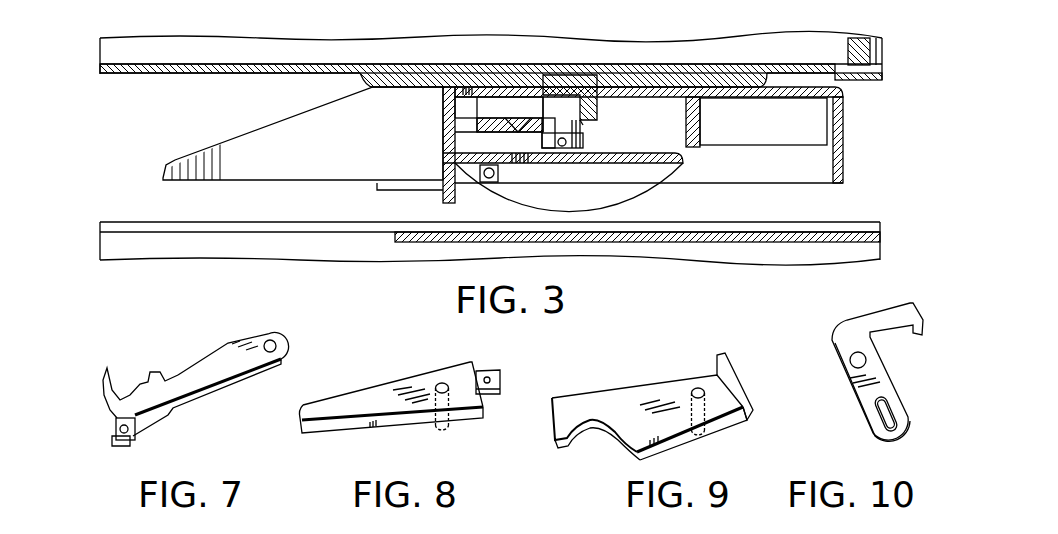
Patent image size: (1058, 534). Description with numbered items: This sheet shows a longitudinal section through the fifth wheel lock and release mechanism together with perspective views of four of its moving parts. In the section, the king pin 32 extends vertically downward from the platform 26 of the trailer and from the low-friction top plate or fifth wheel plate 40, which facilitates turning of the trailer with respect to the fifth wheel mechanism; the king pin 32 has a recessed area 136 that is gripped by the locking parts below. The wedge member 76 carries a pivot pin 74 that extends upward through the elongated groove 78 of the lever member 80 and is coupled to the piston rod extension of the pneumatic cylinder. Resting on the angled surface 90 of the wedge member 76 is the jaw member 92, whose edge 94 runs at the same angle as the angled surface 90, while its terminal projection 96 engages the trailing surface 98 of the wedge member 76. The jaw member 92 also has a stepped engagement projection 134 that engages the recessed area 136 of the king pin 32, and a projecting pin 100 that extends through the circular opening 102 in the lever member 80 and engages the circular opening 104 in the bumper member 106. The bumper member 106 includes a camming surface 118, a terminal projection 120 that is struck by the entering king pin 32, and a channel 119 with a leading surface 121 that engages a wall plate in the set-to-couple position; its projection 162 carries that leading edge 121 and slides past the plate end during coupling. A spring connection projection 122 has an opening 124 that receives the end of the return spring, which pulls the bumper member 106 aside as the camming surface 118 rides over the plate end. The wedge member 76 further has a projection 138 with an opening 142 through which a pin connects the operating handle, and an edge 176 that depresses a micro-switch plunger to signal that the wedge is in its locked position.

In FIG. 3, the platform 26 is at (143, 75).
In FIG. 3, the top plate or fifth wheel plate 40 is at (741, 80).
In FIG. 3, the king pin 32 is at (560, 108).
In FIG. 3, the recessed area 136 is at (583, 125).
In FIG. 7, the circular opening 104 is at (270, 338).
In FIG. 7, the bumper member 106 is at (199, 384).
In FIG. 7, the terminal projection 120 is at (107, 368).
In FIG. 7, the leading surface 121 is at (145, 370).
In FIG. 7, the projection 162 is at (157, 373).
In FIG. 7, the camming surface 118 is at (165, 378).
In FIG. 7, the channel 119 is at (132, 388).
In FIG. 7, the spring connection projection 122 is at (135, 437).
In FIG. 7, the opening 124 is at (113, 433).
In FIG. 8, the wedge member 76 is at (350, 392).
In FIG. 8, the angled surface 90 is at (400, 377).
In FIG. 8, the opening 142 is at (480, 375).
In FIG. 8, the projection 138 is at (497, 372).
In FIG. 8, the edge 176 is at (300, 423).
In FIG. 8, the pivot pin 74 is at (446, 430).
In FIG. 8, the trailing surface 98 is at (487, 402).
In FIG. 9, the jaw member 92 is at (623, 398).
In FIG. 9, the edge 94 is at (653, 382).
In FIG. 9, the terminal projection 96 is at (732, 363).
In FIG. 9, the projecting pin 100 is at (704, 427).
In FIG. 9, the stepped engagement projection 134 is at (584, 434).
In FIG. 10, the lever member 80 is at (845, 320).
In FIG. 10, the circular opening 102 is at (861, 361).
In FIG. 10, the elongated groove 78 is at (878, 414).